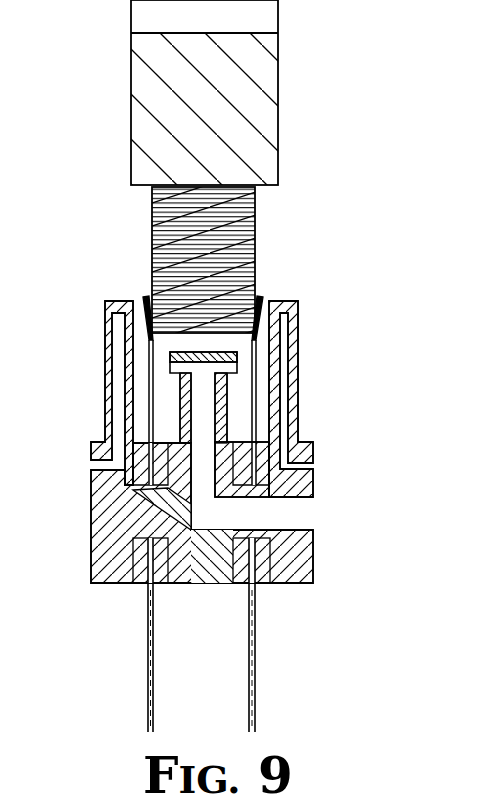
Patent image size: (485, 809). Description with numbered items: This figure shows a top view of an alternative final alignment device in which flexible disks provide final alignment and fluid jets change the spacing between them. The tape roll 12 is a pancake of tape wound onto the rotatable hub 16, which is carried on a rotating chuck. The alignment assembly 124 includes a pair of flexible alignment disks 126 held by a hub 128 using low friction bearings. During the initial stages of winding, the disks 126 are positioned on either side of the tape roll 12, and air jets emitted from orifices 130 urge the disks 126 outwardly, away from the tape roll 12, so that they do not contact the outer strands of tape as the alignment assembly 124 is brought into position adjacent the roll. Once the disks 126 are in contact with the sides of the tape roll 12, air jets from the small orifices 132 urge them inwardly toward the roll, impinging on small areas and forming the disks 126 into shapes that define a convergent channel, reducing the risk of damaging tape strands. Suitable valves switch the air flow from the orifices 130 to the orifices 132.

The rotatable hub 16 is at (278, 106).
The tape roll 12 is at (262, 218).
The orifices 132 is at (129, 316).
The orifices 130 is at (237, 359).
The hub 128 is at (313, 484).
The alignment assembly 124 is at (118, 592).
The alignment disks 126 is at (250, 708).